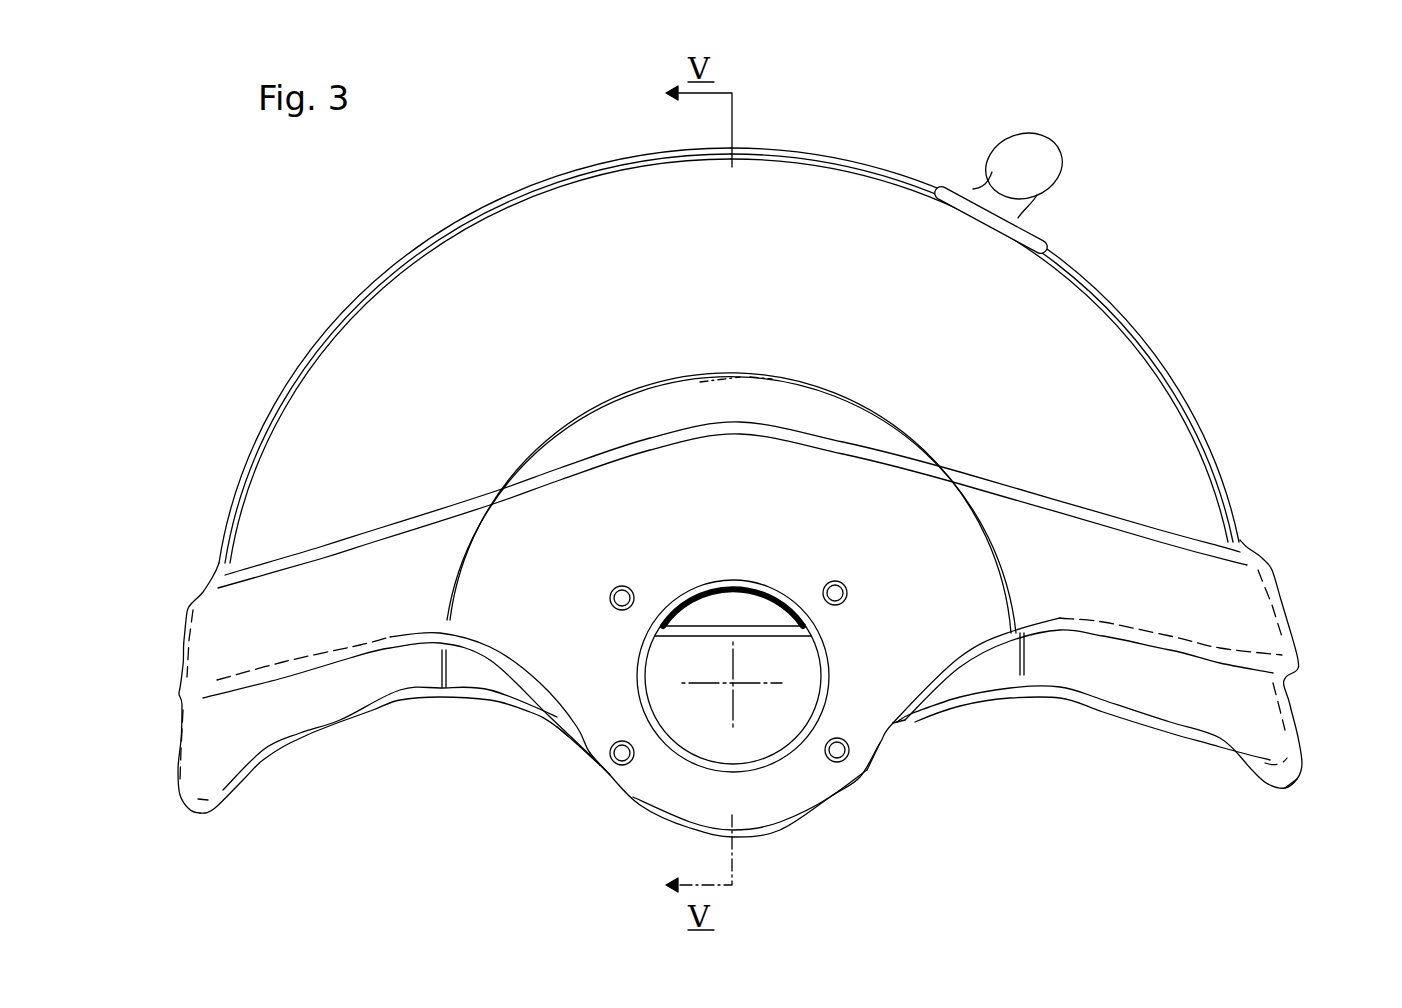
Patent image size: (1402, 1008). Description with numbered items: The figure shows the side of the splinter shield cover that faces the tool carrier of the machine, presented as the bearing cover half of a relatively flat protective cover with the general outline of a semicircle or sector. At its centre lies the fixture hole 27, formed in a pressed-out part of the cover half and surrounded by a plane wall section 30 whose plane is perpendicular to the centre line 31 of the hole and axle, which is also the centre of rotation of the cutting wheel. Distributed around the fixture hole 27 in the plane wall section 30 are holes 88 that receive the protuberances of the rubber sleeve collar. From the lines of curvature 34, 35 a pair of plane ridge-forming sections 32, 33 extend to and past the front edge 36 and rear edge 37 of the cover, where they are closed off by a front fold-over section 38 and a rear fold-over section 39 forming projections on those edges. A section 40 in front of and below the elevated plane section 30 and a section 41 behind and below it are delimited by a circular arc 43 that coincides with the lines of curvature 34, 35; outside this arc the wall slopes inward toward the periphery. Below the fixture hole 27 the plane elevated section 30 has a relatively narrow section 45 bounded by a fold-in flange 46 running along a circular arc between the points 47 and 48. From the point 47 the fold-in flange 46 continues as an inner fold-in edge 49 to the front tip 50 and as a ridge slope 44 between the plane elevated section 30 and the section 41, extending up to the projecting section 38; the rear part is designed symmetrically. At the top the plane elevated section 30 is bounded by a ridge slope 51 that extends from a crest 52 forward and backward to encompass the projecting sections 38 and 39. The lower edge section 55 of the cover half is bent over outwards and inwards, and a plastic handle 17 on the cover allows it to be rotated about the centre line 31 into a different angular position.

The handle 17 is at (1047, 176).
The fixture hole 27 is at (779, 730).
The plane wall section 30 is at (746, 497).
The centre line 31 is at (779, 669).
The ridge-forming section 32 is at (1146, 597).
The ridge-forming section 33 is at (361, 605).
The line of curvature 34 is at (478, 528).
The line of curvature 35 is at (998, 557).
The front edge 36 is at (1210, 395).
The rear edge 37 is at (250, 455).
The front fold-over section 38 is at (1292, 618).
The rear fold-over section 39 is at (183, 652).
The section 40 is at (475, 675).
The section 41 is at (977, 672).
The circular arc 43 is at (920, 458).
The ridge slope 44 is at (518, 670).
The narrow section 45 is at (753, 793).
The fold-in flange 46 is at (633, 797).
The point 47 is at (885, 755).
The point 48 is at (557, 733).
The inner fold-in edge 49 is at (293, 760).
The front tip 50 is at (1300, 773).
The ridge slope 51 is at (860, 455).
The crest 52 is at (740, 424).
The lower edge section 55 is at (703, 630).
The holes 88 is at (845, 595).